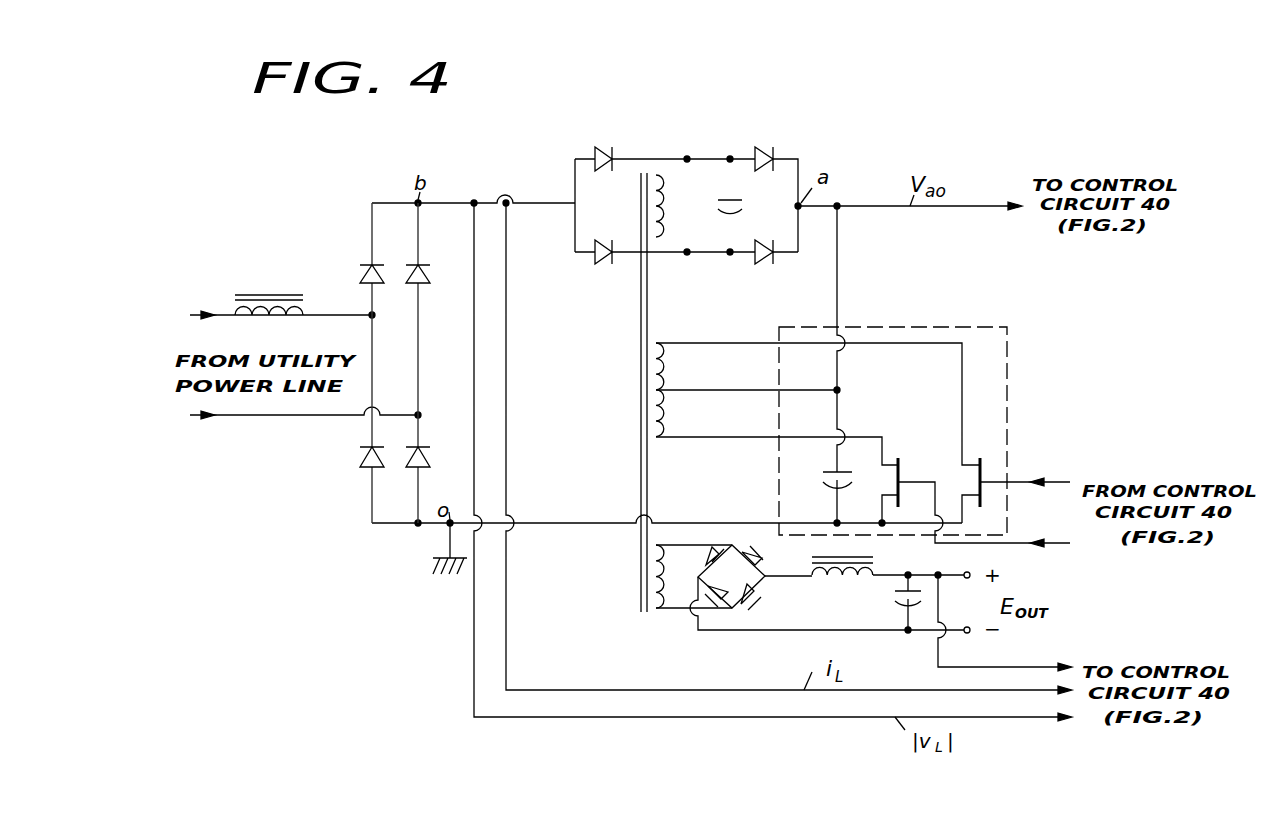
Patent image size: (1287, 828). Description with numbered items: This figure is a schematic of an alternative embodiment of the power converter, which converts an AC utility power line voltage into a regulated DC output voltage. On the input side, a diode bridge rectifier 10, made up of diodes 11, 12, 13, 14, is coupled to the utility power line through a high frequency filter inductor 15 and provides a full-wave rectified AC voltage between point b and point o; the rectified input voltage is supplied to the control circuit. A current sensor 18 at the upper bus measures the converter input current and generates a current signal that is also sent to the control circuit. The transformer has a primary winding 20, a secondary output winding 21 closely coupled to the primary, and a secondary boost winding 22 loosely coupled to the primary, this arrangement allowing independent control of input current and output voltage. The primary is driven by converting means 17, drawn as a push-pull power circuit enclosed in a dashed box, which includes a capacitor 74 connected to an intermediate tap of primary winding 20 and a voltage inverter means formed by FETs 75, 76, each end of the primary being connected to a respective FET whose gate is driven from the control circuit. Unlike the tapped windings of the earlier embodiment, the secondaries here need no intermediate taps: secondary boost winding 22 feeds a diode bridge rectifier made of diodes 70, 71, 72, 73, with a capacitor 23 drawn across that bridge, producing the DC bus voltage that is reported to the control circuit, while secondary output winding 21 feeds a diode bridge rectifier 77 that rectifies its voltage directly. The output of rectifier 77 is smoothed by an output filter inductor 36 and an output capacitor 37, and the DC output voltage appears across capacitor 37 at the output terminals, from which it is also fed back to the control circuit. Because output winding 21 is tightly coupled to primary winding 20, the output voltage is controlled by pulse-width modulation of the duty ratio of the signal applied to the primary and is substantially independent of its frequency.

The diode bridge rectifier 10 is at (410, 369).
The diode 11 is at (360, 272).
The diode 12 is at (428, 274).
The diode 13 is at (360, 454).
The diode 14 is at (430, 456).
The high frequency filter inductor 15 is at (262, 316).
The converting means 17 is at (966, 327).
The current sensor 18 is at (509, 208).
The primary winding 20 is at (670, 367).
The secondary output winding 21 is at (661, 609).
The secondary boost winding 22 is at (665, 212).
The capacitor 23 is at (744, 204).
The output filter inductor 36 is at (848, 578).
The output capacitor 37 is at (900, 597).
The diode 70 is at (604, 150).
The diode 71 is at (606, 264).
The diode 72 is at (768, 150).
The diode 73 is at (772, 262).
The capacitor 74 is at (832, 476).
The FET 75 is at (896, 458).
The FET 76 is at (976, 462).
The diode bridge rectifier 77 is at (746, 588).